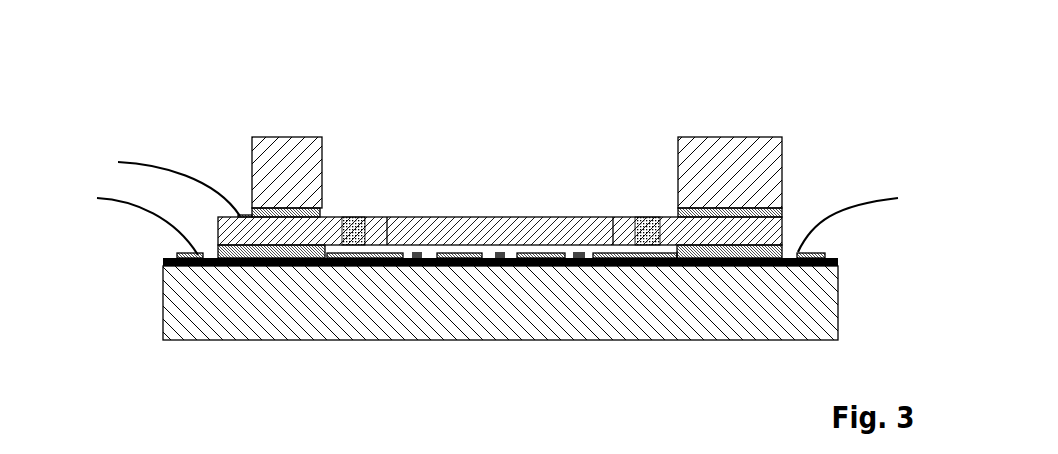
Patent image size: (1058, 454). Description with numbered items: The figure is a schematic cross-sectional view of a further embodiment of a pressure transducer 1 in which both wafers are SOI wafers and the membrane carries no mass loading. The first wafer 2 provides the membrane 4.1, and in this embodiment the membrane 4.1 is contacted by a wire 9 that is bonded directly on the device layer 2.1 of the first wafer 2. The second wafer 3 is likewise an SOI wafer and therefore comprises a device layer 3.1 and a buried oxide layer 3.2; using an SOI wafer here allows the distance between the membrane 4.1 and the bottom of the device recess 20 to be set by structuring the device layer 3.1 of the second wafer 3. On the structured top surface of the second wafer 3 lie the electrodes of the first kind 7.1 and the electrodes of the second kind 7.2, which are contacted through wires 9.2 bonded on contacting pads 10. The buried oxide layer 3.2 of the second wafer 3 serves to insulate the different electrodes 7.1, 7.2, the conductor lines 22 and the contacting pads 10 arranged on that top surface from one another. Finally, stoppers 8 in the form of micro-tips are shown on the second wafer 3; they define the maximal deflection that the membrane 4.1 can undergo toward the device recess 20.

The pressure transducer 1 is at (291, 89).
The first wafer 2 is at (900, 140).
The device layer of the first wafer 2.1 is at (705, 228).
The second wafer 3 is at (900, 250).
The device layer 3.1 is at (697, 245).
The buried oxide layer 3.2 is at (227, 262).
The membrane 4.1 is at (490, 230).
The electrodes of the first kind 7.1 is at (543, 257).
The electrodes of the second kind 7.2 is at (607, 257).
The stoppers 8 is at (500, 258).
The wire 9 is at (145, 160).
The wires 9.2 is at (152, 213).
The contacting pads 10 is at (202, 258).
The device recess 20 is at (425, 258).
The conductor lines 22 is at (338, 257).